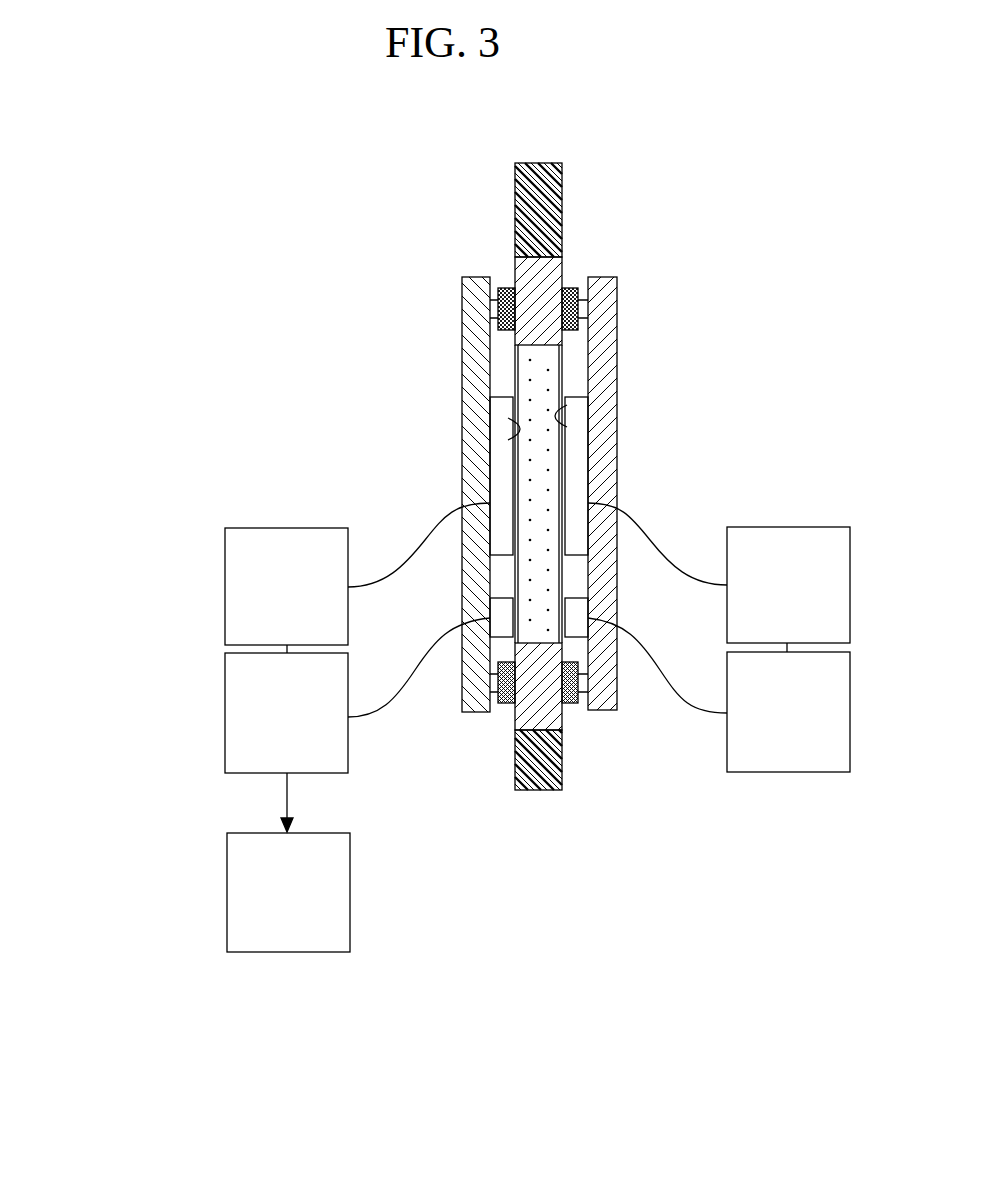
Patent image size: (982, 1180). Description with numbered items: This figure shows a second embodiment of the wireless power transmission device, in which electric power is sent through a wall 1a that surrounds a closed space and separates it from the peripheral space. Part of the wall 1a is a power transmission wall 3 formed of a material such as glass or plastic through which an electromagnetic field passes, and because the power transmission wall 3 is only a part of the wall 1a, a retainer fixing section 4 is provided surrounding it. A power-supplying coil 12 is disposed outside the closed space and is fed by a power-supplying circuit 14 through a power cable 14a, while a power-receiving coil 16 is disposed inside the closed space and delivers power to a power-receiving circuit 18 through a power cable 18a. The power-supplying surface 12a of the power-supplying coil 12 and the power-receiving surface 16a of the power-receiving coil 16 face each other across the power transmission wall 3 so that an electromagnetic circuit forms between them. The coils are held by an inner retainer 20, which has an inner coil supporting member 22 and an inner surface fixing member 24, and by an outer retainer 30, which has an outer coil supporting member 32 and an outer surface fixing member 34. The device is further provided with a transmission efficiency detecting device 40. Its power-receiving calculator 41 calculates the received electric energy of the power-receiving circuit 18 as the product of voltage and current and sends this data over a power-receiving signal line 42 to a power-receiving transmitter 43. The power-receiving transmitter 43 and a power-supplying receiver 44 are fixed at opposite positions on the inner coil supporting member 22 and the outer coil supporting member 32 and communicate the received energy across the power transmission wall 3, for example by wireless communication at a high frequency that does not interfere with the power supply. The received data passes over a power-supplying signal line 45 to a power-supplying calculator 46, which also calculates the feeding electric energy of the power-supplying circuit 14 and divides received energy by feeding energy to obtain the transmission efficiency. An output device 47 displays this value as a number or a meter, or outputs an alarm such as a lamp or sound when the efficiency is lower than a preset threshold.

The wall 1a is at (500, 175).
The power transmission wall 3 is at (535, 383).
The retainer fixing section 4 is at (547, 285).
The power-supplying coil 12 is at (500, 467).
The power-supplying surface 12a is at (508, 418).
The power-supplying circuit 14 is at (255, 548).
The power cable 14a is at (418, 540).
The power-receiving coil 16 is at (580, 458).
The power-receiving surface 16a is at (567, 405).
The power-receiving circuit 18 is at (803, 540).
The power cable 18a is at (662, 543).
The inner retainer 20 is at (680, 491).
The inner coil supporting member 22 is at (612, 357).
The inner surface fixing member 24 is at (580, 297).
The outer retainer 30 is at (390, 502).
The outer coil supporting member 32 is at (465, 340).
The outer surface fixing member 34 is at (505, 290).
The transmission efficiency detecting device 40 is at (451, 798).
The power-receiving calculator 41 is at (788, 755).
The power-receiving signal line 42 is at (672, 700).
The power-receiving transmitter 43 is at (580, 612).
The power-supplying receiver 44 is at (497, 612).
The power-supplying signal line 45 is at (385, 712).
The power-supplying calculator 46 is at (233, 753).
The output device 47 is at (250, 927).